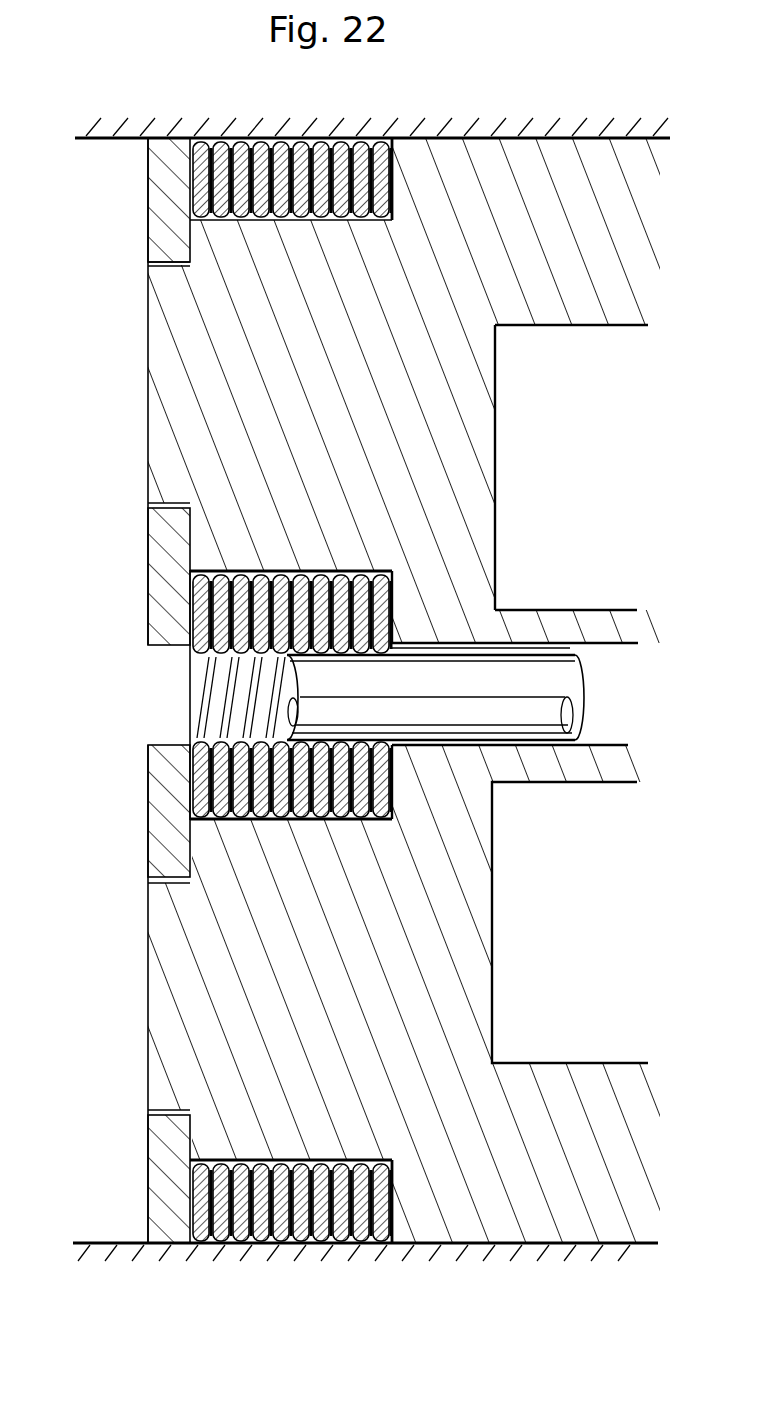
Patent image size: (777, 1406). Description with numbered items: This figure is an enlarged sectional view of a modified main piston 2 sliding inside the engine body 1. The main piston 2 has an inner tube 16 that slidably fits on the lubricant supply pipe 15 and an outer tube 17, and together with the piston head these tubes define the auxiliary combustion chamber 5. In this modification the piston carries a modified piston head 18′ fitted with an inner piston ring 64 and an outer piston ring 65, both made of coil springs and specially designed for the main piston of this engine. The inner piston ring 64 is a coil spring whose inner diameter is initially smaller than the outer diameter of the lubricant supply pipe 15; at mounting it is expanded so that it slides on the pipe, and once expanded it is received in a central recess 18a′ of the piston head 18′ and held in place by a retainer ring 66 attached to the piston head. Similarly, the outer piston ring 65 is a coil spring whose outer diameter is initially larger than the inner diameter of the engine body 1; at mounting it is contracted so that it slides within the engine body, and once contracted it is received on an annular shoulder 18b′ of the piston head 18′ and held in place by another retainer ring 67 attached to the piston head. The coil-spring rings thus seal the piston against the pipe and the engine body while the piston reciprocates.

The engine body 1 is at (477, 130).
The main piston 2 is at (144, 970).
The auxiliary combustion chamber 5 is at (601, 489).
The lubricant supply pipe 15 is at (557, 678).
The inner tube 16 is at (598, 628).
The outer tube 17 is at (588, 310).
The modified piston head 18′ is at (163, 375).
The central recess 18a′ is at (245, 570).
The annular shoulder 18b′ is at (253, 217).
The inner piston ring 64 is at (193, 673).
The outer piston ring 65 is at (160, 611).
The retainer ring 66 is at (190, 213).
The retainer ring 67 is at (162, 203).